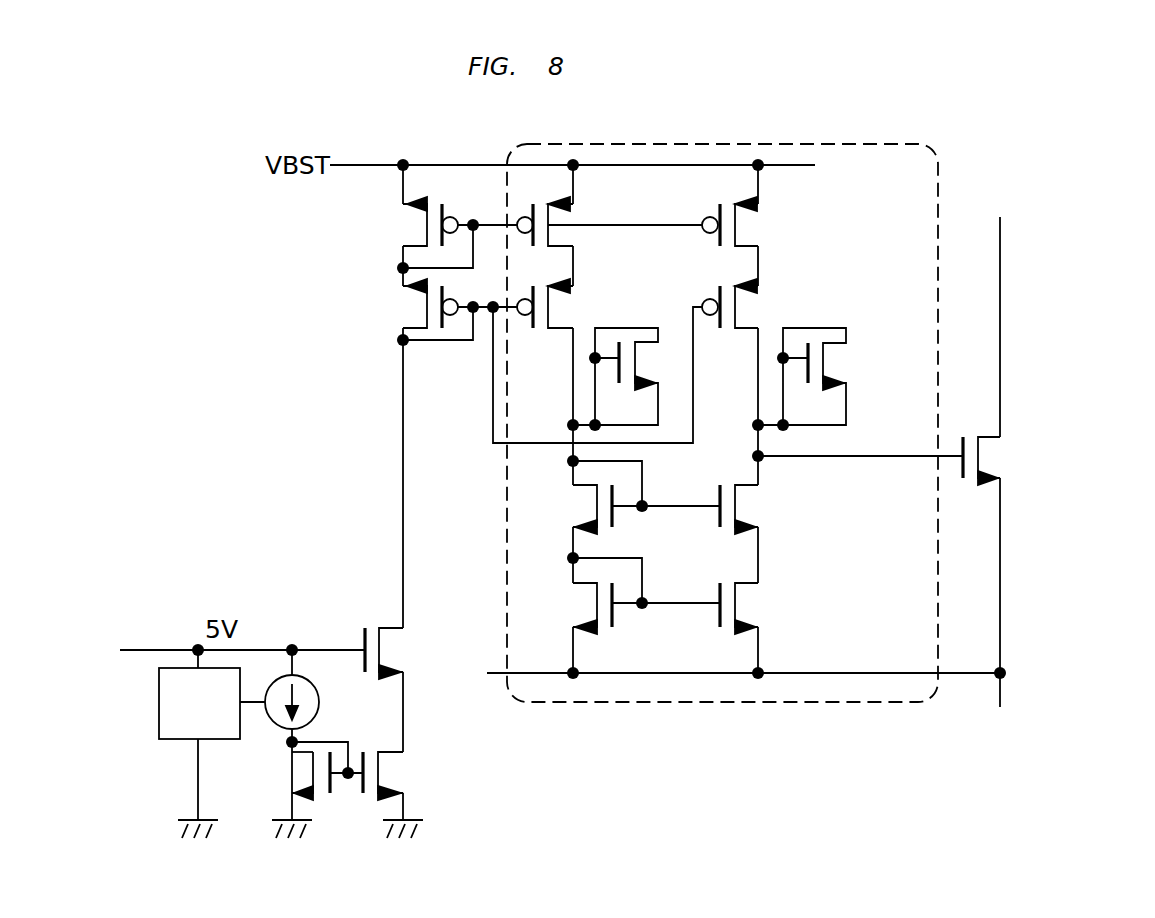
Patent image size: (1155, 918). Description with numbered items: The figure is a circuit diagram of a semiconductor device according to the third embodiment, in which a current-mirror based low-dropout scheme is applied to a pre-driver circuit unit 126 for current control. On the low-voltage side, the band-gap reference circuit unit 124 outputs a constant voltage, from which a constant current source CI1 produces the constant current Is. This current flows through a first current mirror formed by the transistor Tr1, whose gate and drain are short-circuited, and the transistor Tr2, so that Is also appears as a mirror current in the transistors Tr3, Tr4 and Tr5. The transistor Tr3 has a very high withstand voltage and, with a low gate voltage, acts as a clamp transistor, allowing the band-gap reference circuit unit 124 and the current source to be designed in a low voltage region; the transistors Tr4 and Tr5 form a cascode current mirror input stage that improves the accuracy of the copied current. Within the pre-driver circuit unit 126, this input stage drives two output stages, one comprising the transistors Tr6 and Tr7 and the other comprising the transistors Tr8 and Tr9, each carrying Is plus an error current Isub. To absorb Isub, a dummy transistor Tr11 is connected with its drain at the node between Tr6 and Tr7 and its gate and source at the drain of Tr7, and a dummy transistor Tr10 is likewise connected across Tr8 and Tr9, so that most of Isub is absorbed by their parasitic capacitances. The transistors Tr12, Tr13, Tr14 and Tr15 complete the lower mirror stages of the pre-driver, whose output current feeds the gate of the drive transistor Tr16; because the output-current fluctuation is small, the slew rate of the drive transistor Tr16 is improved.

The BGR circuit unit 124 is at (159, 702).
The pre-driver circuit unit 126 is at (938, 178).
The constant current source CI1 is at (317, 711).
The transistor Tr1 is at (330, 800).
The transistor Tr2 is at (363, 800).
The transistor Tr3 is at (365, 634).
The transistor Tr4 is at (403, 231).
The transistor Tr5 is at (403, 311).
The transistor Tr6 is at (568, 214).
The transistor Tr7 is at (568, 300).
The transistor Tr8 is at (760, 221).
The transistor Tr9 is at (760, 301).
The dummy transistor Tr10 is at (838, 369).
The dummy transistor Tr11 is at (660, 362).
The transistor Tr12 is at (578, 511).
The transistor Tr13 is at (760, 504).
The transistor Tr14 is at (578, 611).
The transistor Tr15 is at (760, 606).
The drive transistor Tr16 is at (1000, 459).